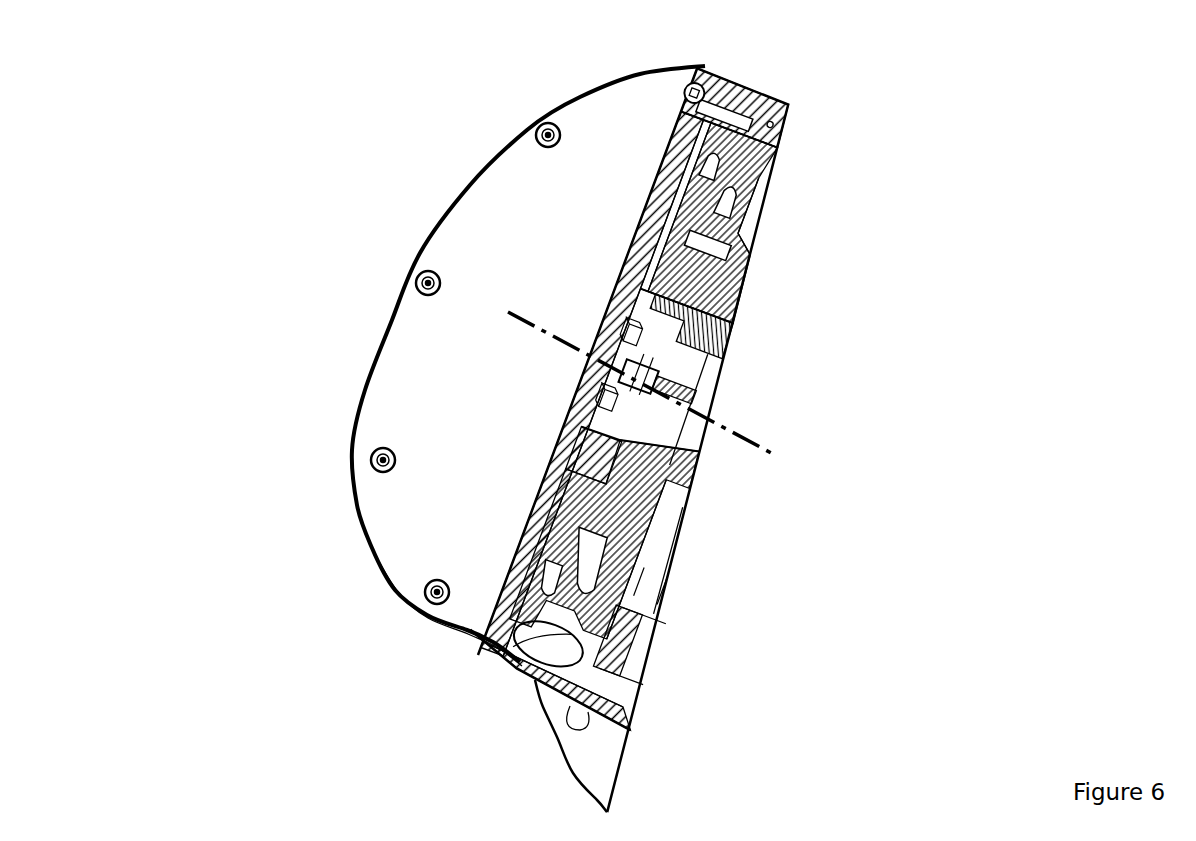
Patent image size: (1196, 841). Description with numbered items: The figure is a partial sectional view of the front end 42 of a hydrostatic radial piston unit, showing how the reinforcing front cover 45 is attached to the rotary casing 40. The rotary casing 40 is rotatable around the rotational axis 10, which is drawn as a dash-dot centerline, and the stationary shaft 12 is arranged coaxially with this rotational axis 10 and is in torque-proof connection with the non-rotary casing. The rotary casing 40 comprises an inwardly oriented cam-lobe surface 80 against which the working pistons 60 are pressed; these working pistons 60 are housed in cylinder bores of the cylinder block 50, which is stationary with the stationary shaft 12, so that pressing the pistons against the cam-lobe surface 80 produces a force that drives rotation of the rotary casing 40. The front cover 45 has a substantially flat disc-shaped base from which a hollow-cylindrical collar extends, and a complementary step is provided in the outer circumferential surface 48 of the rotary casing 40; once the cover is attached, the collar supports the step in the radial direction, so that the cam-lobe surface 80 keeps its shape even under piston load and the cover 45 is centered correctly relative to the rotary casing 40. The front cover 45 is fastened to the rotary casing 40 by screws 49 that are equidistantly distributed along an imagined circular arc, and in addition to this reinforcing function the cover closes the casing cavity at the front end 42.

The rotational axis 10 is at (508, 312).
The stationary shaft 12 is at (727, 337).
The rotary casing 40 is at (787, 128).
The front end 42 is at (512, 668).
The front cover 45 is at (410, 522).
The outer circumferential surface 48 is at (560, 698).
The fastening screws 49 is at (687, 87).
The cylinder block 50 is at (743, 273).
The working pistons 60 is at (757, 237).
The cam-lobe surface 80 is at (737, 147).